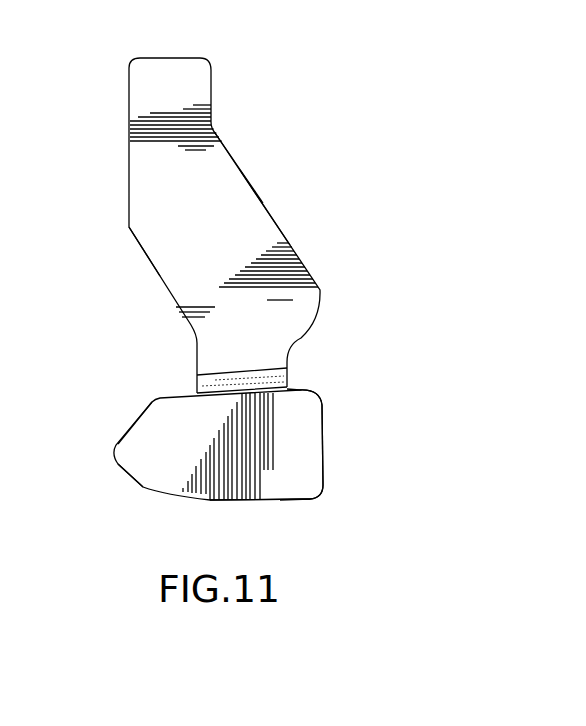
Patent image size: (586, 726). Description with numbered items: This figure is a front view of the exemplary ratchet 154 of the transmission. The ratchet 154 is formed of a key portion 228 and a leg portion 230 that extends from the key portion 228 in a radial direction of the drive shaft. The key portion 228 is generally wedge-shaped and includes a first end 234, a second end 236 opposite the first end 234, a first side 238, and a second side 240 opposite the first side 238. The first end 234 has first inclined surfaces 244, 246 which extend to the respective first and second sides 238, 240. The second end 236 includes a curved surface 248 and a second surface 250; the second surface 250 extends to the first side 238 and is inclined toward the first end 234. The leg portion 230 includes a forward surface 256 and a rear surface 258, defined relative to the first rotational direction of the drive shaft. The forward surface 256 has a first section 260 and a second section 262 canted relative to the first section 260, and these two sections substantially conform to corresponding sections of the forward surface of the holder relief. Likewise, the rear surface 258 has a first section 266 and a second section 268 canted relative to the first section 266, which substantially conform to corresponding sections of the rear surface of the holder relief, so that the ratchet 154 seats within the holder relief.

The ratchet 154 is at (292, 100).
The second section of the forward surface 262 is at (212, 90).
The second section of the rear surface 268 is at (128, 153).
The leg portion 230 is at (221, 193).
The forward surface 256 is at (264, 203).
The first section of the forward surface 260 is at (298, 252).
The rear surface 258 is at (137, 239).
The first section of the rear surface 266 is at (161, 284).
The first side 238 is at (177, 393).
The first end 234 is at (133, 462).
The key portion 228 is at (247, 481).
The second surface 250 is at (313, 396).
The curved surface 248 is at (325, 447).
The second end 236 is at (313, 467).
The second side 240 is at (281, 500).
The first inclined surface 244 is at (139, 420).
The first inclined surface 246 is at (130, 469).